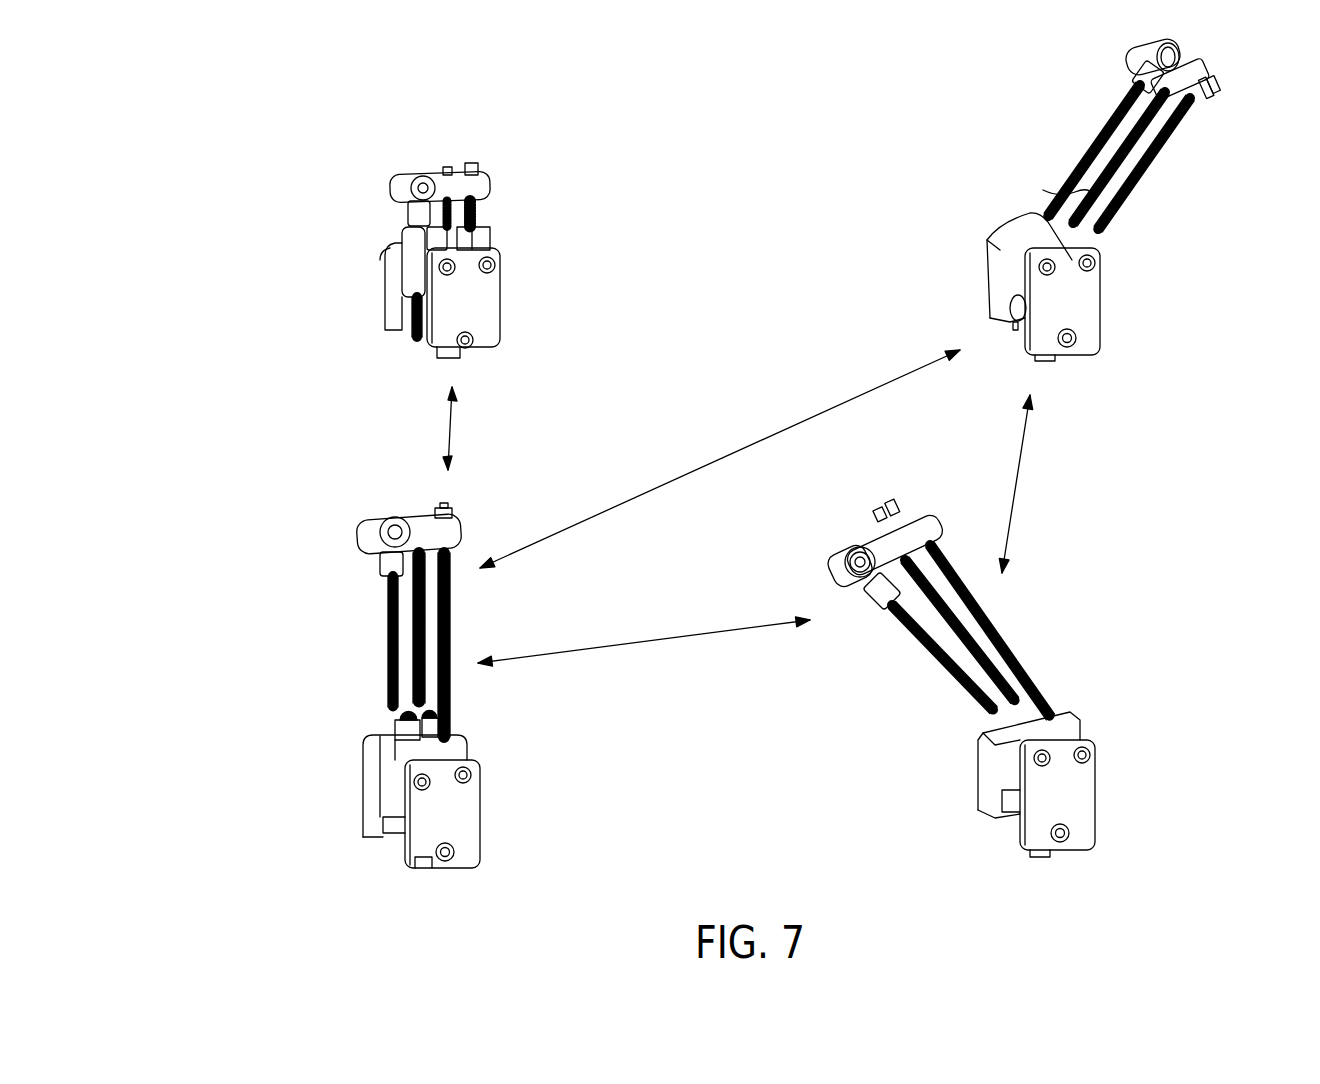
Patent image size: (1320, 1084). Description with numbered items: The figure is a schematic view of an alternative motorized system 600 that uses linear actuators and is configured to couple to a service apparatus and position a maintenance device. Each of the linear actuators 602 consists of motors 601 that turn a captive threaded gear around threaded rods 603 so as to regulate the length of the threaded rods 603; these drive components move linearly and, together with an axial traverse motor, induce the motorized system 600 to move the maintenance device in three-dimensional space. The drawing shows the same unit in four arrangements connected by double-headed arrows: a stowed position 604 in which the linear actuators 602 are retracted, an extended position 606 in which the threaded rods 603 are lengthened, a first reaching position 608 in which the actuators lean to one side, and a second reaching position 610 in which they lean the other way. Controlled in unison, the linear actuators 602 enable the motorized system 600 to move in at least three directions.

The motorized system 600 is at (358, 292).
The motors 601 is at (423, 718).
The linear actuators 602 is at (428, 217).
The threaded rods 603 is at (433, 650).
The stowed position 604 is at (378, 155).
The extended position 606 is at (340, 506).
The first reaching position 608 is at (850, 666).
The second reaching position 610 is at (1162, 365).